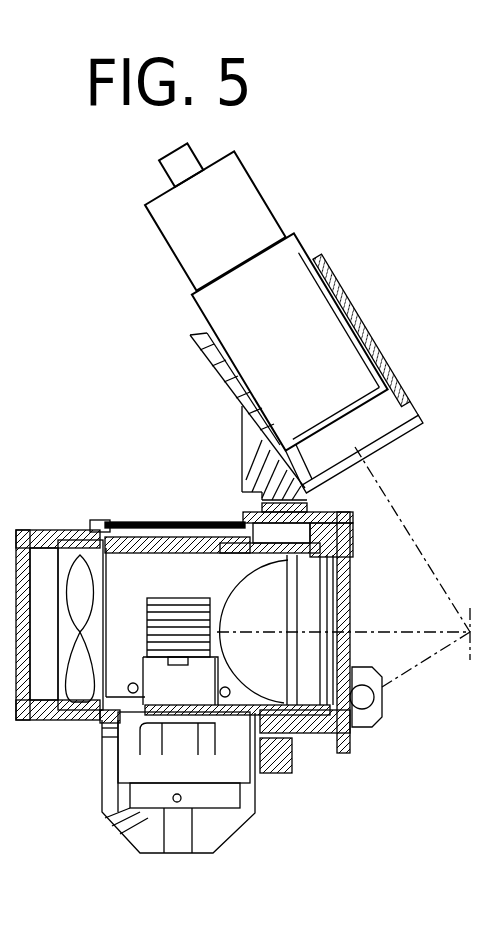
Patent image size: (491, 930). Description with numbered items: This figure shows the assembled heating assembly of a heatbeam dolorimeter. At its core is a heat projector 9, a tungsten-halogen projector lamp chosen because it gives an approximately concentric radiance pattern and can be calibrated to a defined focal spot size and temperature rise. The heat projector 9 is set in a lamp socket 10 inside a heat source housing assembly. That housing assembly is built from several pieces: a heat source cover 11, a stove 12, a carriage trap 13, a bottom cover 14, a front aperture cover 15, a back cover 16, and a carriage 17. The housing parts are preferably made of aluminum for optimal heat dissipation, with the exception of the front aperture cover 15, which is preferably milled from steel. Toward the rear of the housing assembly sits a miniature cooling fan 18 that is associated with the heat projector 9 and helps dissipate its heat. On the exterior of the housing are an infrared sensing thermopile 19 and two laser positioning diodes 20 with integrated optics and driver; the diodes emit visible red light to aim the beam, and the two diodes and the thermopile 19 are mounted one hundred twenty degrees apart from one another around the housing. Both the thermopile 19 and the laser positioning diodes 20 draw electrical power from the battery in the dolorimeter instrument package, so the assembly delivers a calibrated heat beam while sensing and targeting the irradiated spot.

The heat projector 9 is at (243, 592).
The lamp socket 10 is at (153, 673).
The heat source cover 11 is at (145, 527).
The stove 12 is at (303, 720).
The carriage trap 13 is at (237, 769).
The bottom cover 14 is at (217, 800).
The front aperture cover 15 is at (352, 530).
The back cover 16 is at (33, 530).
The carriage 17 is at (143, 741).
The miniature cooling fan 18 is at (78, 560).
The infrared sensing thermopile 19 is at (255, 192).
The laser positioning diodes 20 is at (60, 742).